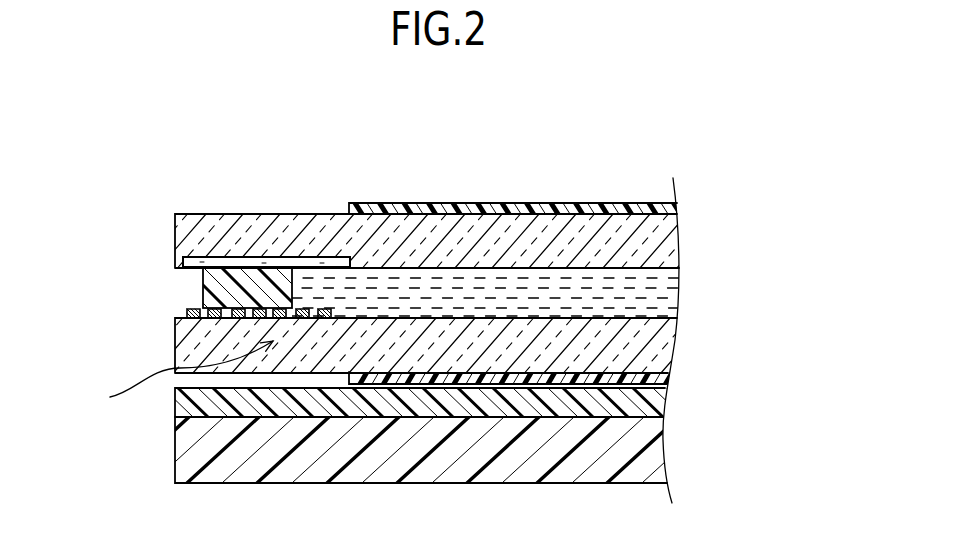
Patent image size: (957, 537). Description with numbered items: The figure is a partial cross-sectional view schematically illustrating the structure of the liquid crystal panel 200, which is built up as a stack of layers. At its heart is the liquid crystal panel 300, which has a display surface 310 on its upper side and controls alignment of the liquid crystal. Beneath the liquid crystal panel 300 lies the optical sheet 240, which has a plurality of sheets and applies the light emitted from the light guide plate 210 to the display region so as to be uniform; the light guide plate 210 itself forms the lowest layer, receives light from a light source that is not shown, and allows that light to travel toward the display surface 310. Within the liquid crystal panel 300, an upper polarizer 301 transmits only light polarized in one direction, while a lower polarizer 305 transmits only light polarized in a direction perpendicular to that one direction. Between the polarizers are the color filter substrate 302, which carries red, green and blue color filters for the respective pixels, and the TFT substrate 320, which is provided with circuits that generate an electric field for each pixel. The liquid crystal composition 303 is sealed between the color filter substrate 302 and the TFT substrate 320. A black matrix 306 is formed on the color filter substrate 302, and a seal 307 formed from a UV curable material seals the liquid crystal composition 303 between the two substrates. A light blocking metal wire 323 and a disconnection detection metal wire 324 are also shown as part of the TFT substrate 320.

The liquid crystal panel 200 is at (437, 165).
The light guide plate 210 is at (652, 458).
The optical sheet 240 is at (645, 405).
The liquid crystal panel 300 is at (802, 203).
The upper polarizer 301 is at (678, 208).
The color filter substrate 302 is at (665, 242).
The liquid crystal composition 303 is at (655, 295).
The lower polarizer 305 is at (665, 382).
The black matrix 306 is at (183, 262).
The seal 307 is at (204, 300).
The display surface 310 is at (572, 175).
The TFT substrate 320 is at (652, 343).
The light blocking metal wire 323 is at (174, 385).
The disconnection detection metal wire 324 is at (185, 317).